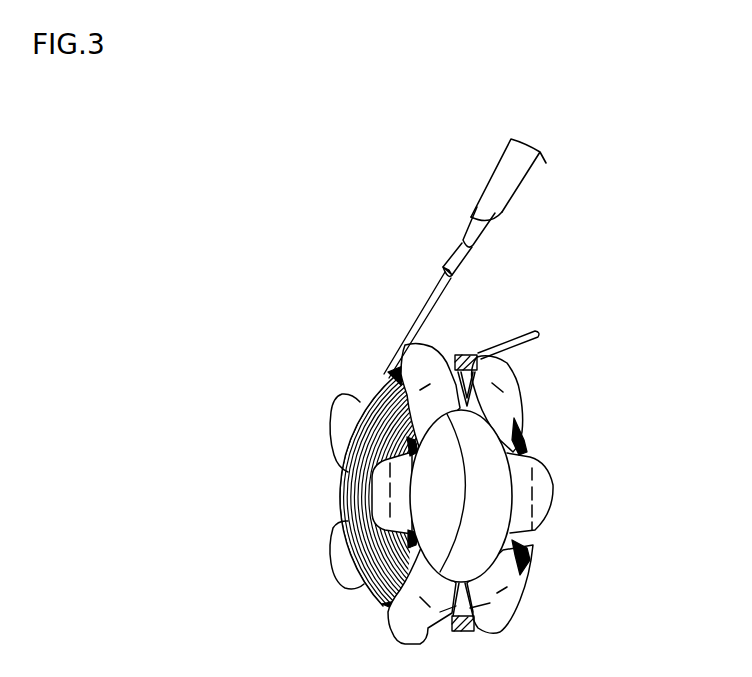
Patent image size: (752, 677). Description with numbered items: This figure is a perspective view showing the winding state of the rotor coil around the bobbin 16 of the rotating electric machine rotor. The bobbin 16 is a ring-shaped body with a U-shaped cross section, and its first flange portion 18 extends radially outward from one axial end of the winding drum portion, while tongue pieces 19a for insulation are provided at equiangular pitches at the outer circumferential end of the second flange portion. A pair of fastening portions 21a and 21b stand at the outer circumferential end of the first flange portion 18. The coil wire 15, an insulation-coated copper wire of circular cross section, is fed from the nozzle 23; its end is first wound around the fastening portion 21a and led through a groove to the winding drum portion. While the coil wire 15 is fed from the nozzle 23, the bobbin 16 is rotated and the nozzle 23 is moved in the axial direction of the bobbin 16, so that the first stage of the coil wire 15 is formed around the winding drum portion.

The nozzle 23 is at (488, 185).
The coil wire 15 is at (428, 306).
The fastening portion 21a is at (473, 348).
The bobbin 16 is at (527, 398).
The tongue piece 19a is at (340, 432).
The first flange portion 18 is at (529, 497).
The fastening portion 21b is at (468, 632).